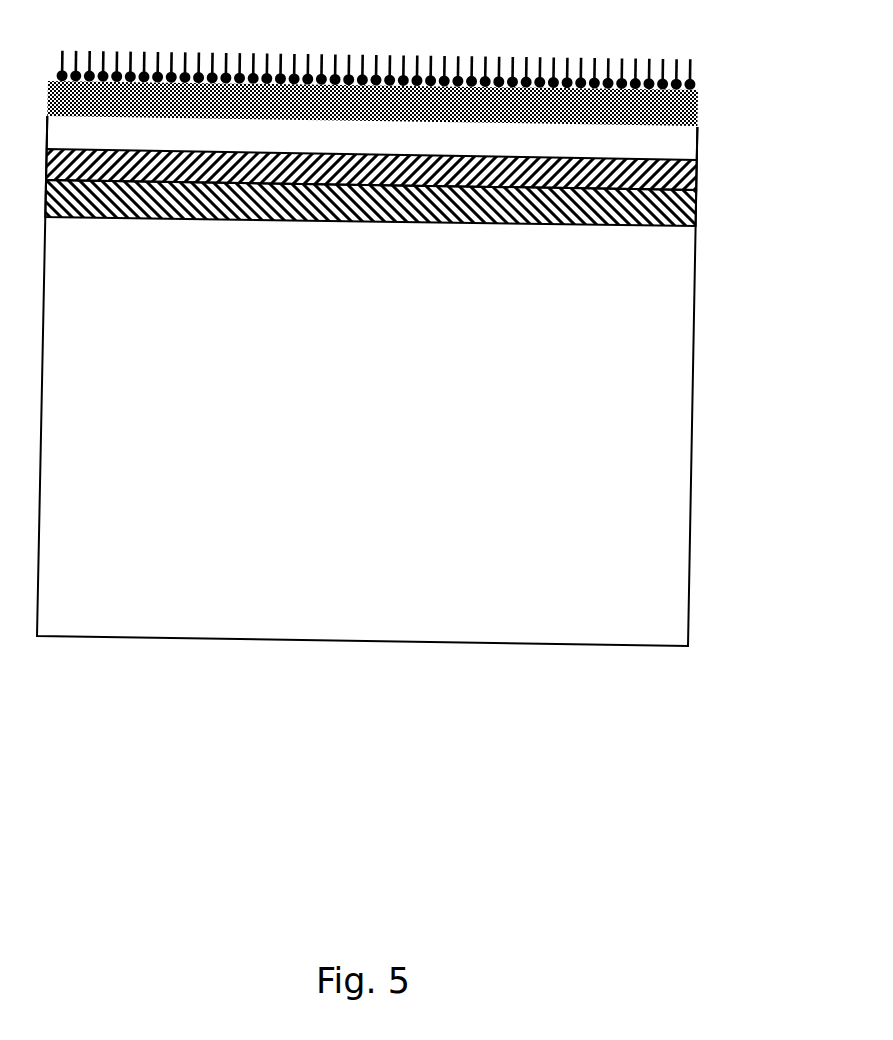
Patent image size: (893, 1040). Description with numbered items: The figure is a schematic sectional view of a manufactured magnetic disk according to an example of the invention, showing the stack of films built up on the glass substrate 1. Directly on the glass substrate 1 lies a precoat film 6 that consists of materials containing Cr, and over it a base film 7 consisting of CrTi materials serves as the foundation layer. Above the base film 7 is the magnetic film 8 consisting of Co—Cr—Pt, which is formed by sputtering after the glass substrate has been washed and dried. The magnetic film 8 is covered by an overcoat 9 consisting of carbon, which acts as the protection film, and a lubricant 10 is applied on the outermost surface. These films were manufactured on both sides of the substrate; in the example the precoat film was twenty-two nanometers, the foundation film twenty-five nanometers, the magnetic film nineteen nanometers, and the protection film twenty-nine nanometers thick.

The glass substrate 1 is at (658, 367).
The precoat film 6 is at (697, 227).
The base film 7 is at (697, 190).
The magnetic film 8 is at (672, 147).
The overcoat 9 is at (698, 100).
The lubricant 10 is at (650, 70).